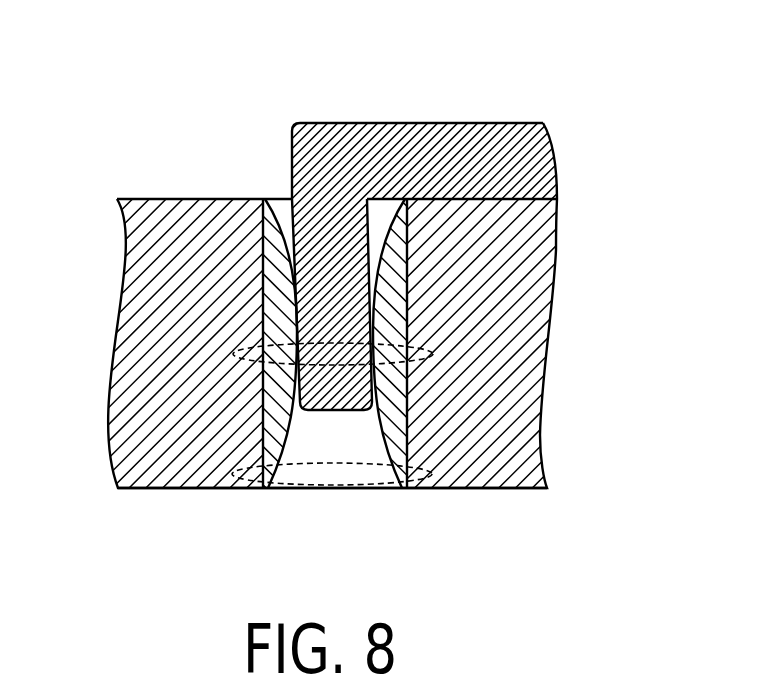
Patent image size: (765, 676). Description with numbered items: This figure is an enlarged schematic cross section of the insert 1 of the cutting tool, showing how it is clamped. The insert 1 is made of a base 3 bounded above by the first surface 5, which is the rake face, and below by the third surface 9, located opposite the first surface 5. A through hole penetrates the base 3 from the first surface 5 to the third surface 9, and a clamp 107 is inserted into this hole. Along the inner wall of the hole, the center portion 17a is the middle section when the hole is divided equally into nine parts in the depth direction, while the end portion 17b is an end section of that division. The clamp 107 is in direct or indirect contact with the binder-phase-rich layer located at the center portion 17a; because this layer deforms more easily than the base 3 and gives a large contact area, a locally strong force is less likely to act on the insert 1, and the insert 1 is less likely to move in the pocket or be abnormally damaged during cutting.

The insert 1 is at (566, 50).
The base 3 is at (488, 344).
The first surface 5 is at (190, 198).
The third surface 9 is at (182, 489).
The center portion 17a is at (313, 349).
The end portion 17b is at (287, 467).
The clamp 107 is at (428, 163).